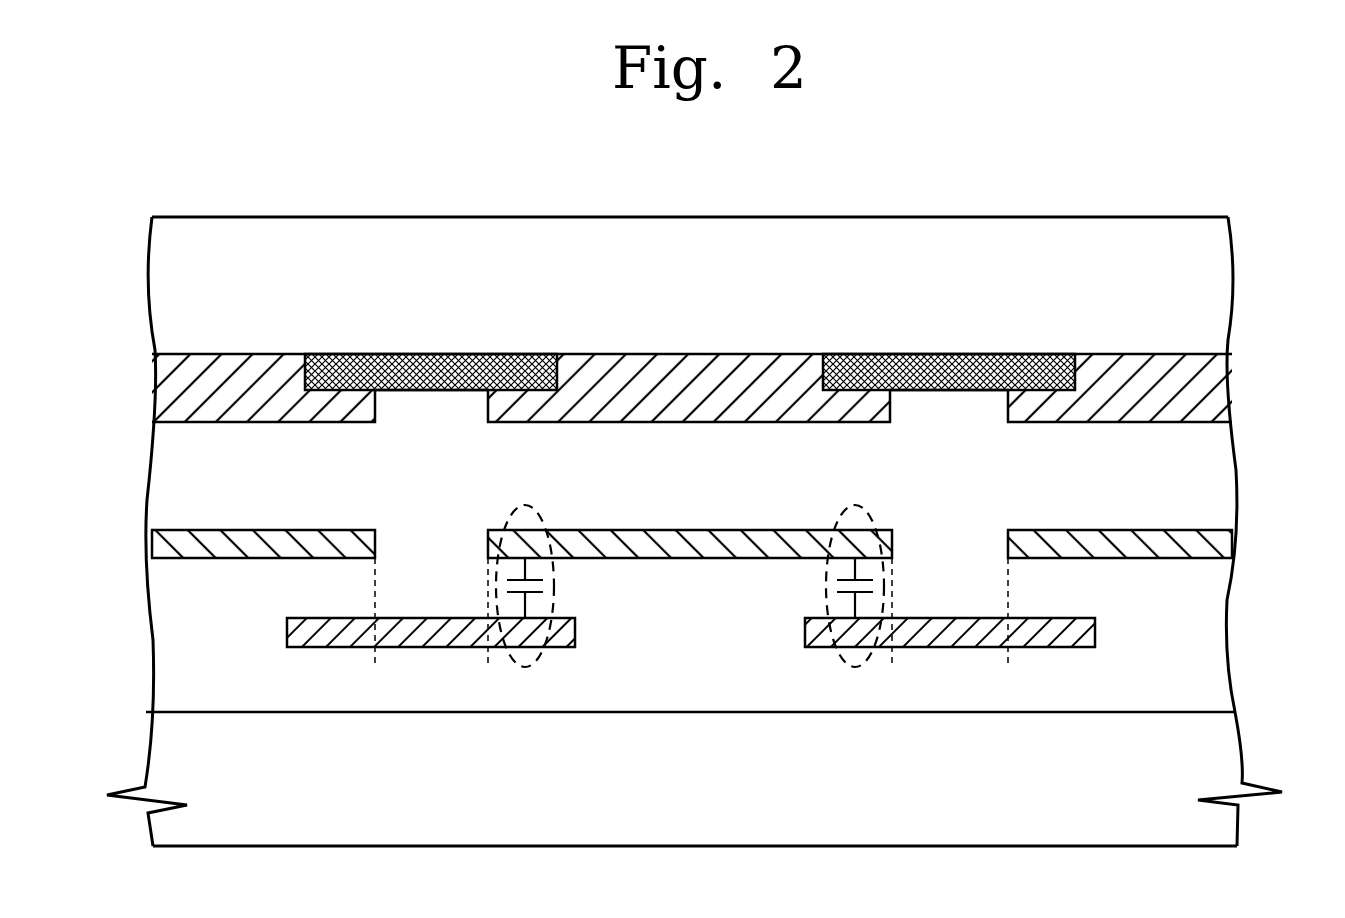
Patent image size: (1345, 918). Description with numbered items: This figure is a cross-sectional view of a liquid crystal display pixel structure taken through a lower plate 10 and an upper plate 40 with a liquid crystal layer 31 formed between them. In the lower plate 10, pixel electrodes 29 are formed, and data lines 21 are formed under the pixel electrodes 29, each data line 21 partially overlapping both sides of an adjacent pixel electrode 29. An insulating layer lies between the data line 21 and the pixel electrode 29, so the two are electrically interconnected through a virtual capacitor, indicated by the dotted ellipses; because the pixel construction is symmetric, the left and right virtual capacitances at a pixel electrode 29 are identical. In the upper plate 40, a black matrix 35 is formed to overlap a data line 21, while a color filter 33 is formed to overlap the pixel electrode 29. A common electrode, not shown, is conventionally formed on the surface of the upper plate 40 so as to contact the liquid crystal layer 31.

The lower plate 10 is at (1210, 749).
The data line 21 is at (1095, 625).
The pixel electrode 29 is at (892, 526).
The liquid crystal layer 31 is at (1207, 452).
The color filter 33 is at (1213, 390).
The black matrix 35 is at (1048, 353).
The upper plate 40 is at (1207, 280).